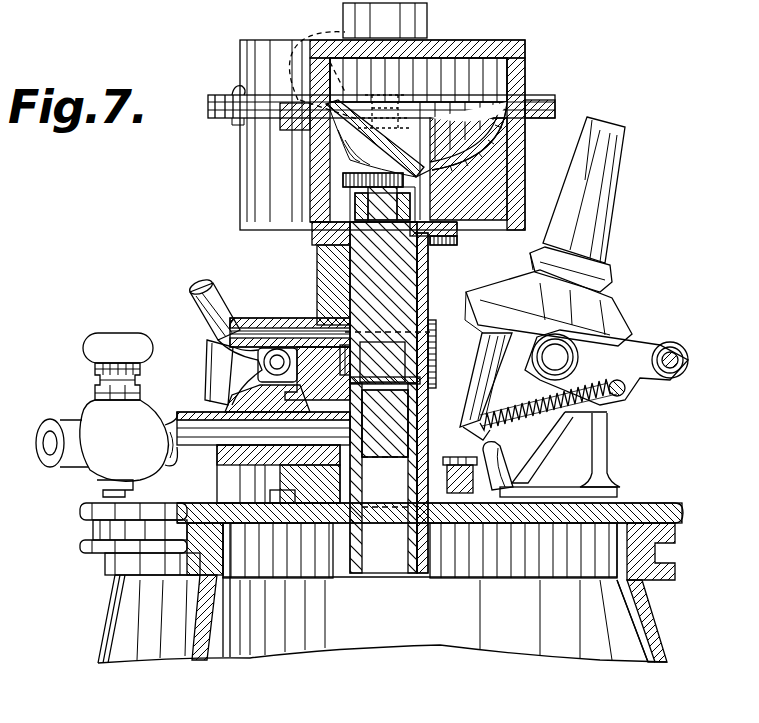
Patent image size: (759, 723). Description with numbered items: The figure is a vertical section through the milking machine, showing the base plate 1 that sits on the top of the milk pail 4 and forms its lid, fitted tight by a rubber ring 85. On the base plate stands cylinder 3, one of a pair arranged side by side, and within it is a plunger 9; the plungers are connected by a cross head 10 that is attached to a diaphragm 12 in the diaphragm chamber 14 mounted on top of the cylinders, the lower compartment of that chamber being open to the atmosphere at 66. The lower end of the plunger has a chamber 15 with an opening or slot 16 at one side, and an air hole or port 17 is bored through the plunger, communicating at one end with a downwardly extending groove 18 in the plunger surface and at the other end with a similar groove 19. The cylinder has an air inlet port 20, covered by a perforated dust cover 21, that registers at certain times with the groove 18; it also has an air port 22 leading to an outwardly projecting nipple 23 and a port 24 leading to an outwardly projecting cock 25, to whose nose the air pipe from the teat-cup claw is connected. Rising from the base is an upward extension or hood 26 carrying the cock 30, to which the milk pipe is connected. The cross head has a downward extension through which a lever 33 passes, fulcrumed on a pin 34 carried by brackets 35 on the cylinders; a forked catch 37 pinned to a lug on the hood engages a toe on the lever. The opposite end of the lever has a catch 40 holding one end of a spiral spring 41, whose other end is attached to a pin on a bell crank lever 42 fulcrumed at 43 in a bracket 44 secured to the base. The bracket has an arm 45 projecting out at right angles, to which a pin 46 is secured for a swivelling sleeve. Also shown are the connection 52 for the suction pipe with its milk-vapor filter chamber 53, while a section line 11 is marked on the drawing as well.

The base plate 1 is at (497, 545).
The cylinder 3 is at (320, 245).
The milk pail 4 is at (662, 625).
The plunger 9 is at (382, 250).
The cross head 10 is at (400, 175).
The column 11 is at (294, 714).
The diaphragm 12 is at (322, 45).
The diaphragm chamber 14 is at (480, 75).
The chamber 15 is at (385, 545).
The opening or slot 16 is at (370, 425).
The air hole or port 17 is at (440, 330).
The downwardly extending groove 18 is at (425, 398).
The groove 19 is at (390, 440).
The air inlet port 20 is at (428, 375).
The perforated dust cover 21 is at (428, 320).
The air port 22 is at (345, 320).
The nipple 23 is at (228, 330).
The port 24 is at (330, 500).
The cock 25 is at (185, 412).
The upward extension or hood 26 is at (200, 478).
The cock 30 is at (90, 420).
The lever 33 is at (260, 330).
The pin 34 is at (212, 365).
The bracket 35 is at (290, 364).
The forked catch 37 is at (192, 300).
The catch 40 is at (510, 445).
The spiral spring 41 is at (630, 392).
The bell crank lever 42 is at (590, 415).
The fulcrum 43 is at (580, 320).
The bracket 44 is at (545, 478).
The arm 45 is at (638, 353).
The pin 46 is at (685, 352).
The suction pipe connection 52 is at (610, 160).
The milk-vapor filter chamber 53 is at (610, 285).
The atmospheric opening 66 is at (490, 237).
The rubber ring 85 is at (80, 523).